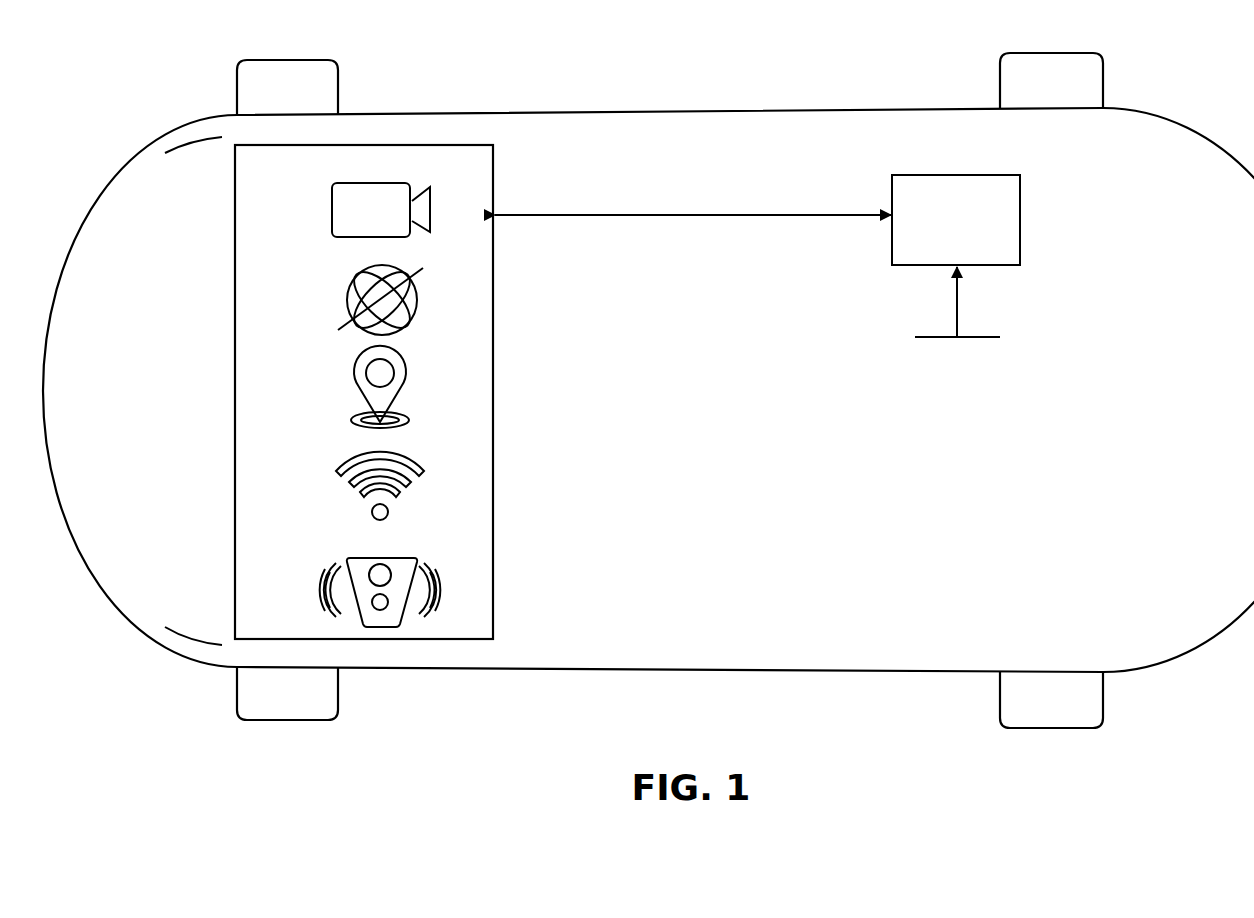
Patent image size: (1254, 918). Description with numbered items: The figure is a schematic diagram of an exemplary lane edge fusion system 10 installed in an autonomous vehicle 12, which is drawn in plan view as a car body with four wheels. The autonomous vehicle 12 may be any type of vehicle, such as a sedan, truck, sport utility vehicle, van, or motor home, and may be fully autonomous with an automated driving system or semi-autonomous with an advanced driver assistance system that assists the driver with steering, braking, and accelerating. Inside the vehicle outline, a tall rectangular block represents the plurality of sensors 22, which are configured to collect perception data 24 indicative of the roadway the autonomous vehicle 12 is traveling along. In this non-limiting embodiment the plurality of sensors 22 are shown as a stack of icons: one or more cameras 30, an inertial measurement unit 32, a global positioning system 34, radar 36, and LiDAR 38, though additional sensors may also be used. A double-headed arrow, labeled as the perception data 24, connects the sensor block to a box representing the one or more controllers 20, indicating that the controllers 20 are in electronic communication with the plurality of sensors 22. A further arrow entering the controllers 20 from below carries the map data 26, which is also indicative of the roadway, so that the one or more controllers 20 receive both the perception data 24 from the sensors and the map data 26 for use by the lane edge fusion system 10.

The lane edge fusion system 10 is at (996, 152).
The autonomous vehicle 12 is at (666, 112).
The controller 20 is at (971, 229).
The plurality of sensors 22 is at (235, 383).
The perception data 24 is at (706, 216).
The map data 26 is at (971, 372).
The camera 30 is at (353, 182).
The inertial measurement unit 32 is at (363, 270).
The global positioning system 34 is at (358, 360).
The radar 36 is at (355, 458).
The LiDAR 38 is at (360, 557).